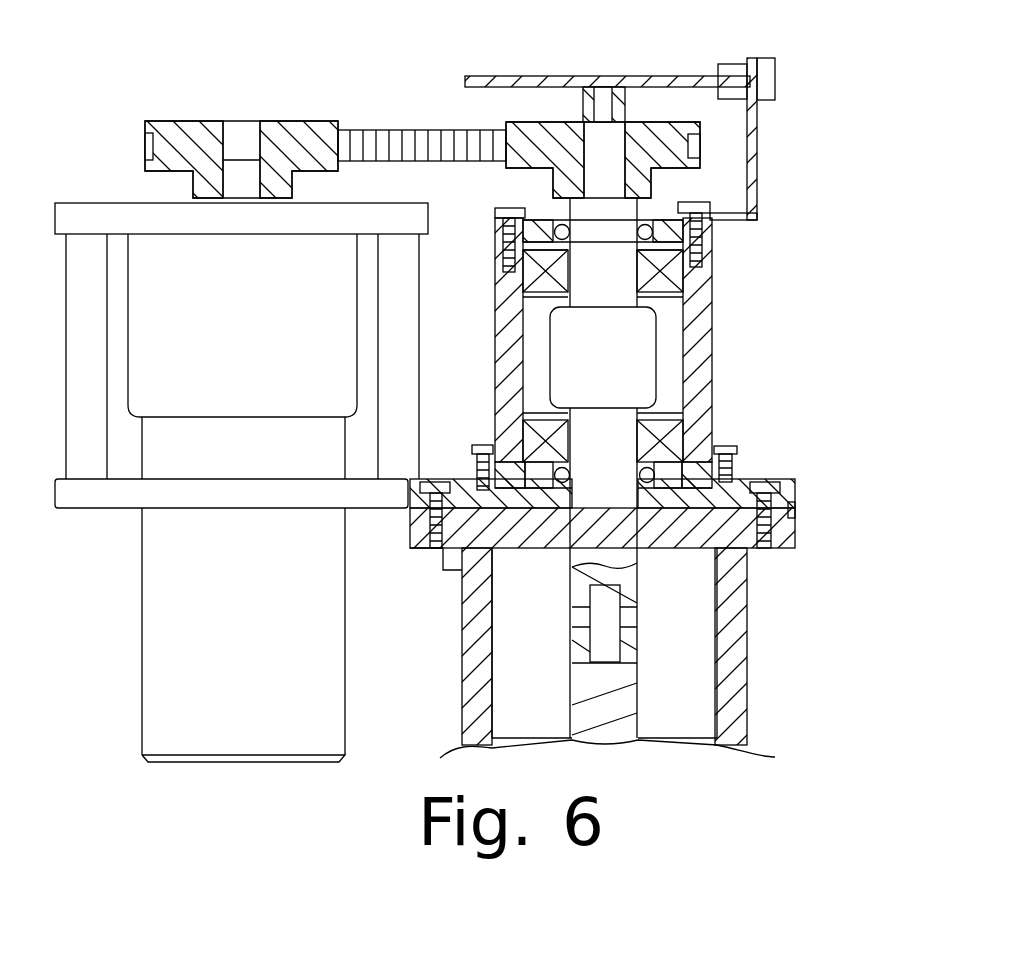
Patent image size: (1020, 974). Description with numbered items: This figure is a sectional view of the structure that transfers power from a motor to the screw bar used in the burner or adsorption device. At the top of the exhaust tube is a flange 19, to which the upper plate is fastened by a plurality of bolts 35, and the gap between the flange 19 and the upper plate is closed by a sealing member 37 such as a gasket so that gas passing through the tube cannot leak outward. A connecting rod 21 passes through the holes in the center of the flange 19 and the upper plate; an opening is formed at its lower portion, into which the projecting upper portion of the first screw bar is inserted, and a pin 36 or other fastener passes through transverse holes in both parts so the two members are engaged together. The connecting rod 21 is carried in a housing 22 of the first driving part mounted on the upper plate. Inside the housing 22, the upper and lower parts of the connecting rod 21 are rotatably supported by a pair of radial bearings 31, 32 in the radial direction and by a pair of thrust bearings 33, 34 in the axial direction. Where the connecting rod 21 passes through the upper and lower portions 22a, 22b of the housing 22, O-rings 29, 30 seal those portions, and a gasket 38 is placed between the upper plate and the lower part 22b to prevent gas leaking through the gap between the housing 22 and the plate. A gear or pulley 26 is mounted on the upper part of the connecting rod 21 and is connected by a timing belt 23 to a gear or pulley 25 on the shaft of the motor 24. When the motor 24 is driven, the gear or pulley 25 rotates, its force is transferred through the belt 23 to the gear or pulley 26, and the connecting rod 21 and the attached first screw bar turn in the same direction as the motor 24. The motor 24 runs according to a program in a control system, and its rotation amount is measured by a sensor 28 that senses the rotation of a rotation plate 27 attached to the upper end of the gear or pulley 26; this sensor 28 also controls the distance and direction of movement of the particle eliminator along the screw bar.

The flange 19 is at (452, 552).
The connecting rod 21 is at (640, 380).
The housing 22 is at (698, 317).
The upper portion of the housing 22a is at (700, 233).
The lower part of the housing 22b is at (713, 465).
The timing belt 23 is at (423, 130).
The motor 24 is at (272, 733).
The gear or pulley 25 is at (203, 120).
The gear or pulley 26 is at (677, 145).
The rotation plate 27 is at (558, 77).
The sensor 28 is at (733, 63).
The O-ring 29 is at (503, 252).
The O-ring 30 is at (663, 483).
The radial bearing 31 is at (675, 275).
The radial bearing 32 is at (675, 440).
The thrust bearing 33 is at (562, 296).
The thrust bearing 34 is at (563, 418).
The bolt 35 is at (782, 488).
The pin 36 is at (580, 618).
The sealing member 37 is at (413, 512).
The gasket 38 is at (795, 510).